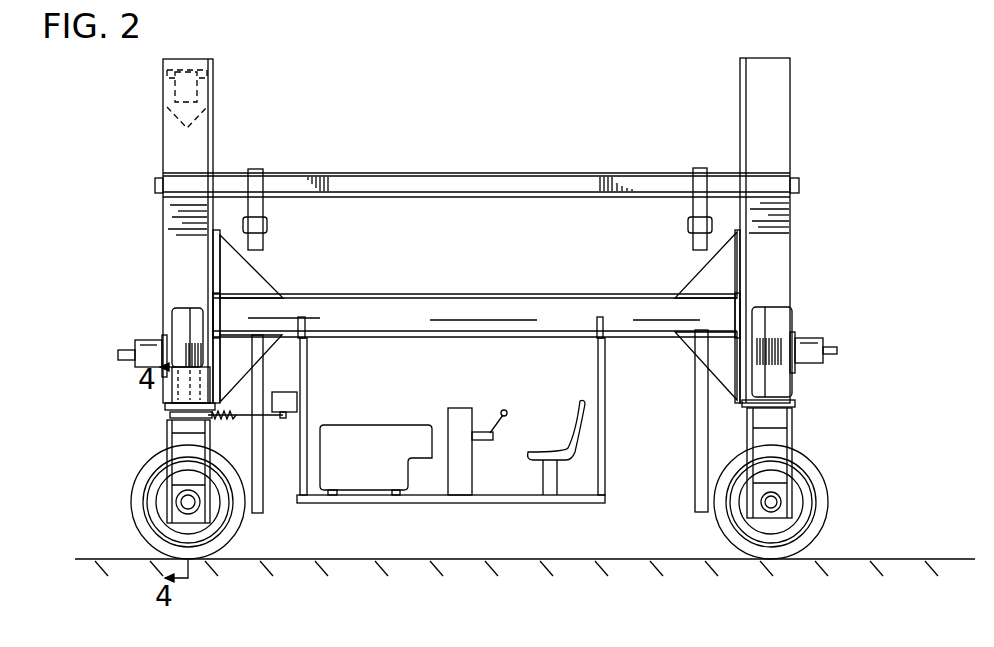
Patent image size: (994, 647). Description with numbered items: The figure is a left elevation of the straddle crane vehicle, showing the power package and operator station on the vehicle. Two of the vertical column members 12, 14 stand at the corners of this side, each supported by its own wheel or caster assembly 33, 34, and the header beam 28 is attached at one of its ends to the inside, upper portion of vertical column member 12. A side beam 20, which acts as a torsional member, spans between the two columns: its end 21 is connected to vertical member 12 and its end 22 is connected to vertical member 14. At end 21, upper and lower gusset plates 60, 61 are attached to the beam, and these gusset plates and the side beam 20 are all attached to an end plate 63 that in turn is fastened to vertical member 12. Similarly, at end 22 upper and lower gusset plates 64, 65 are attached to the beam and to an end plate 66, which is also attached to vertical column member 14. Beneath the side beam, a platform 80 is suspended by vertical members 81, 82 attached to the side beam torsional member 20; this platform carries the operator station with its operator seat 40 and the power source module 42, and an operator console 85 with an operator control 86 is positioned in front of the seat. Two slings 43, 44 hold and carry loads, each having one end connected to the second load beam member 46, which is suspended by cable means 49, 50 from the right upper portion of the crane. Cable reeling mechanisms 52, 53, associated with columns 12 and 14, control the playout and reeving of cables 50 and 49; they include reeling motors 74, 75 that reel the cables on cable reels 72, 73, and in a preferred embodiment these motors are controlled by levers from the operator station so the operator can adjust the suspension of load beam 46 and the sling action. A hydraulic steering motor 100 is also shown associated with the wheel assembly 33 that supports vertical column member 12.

The vertical column member 12 is at (173, 152).
The vertical column member 14 is at (780, 137).
The side beam 20 is at (450, 300).
The end of side beam 21 is at (228, 300).
The end of side beam 22 is at (732, 300).
The header beam 28 is at (200, 93).
The wheel or caster assembly 33 is at (126, 514).
The wheel or caster assembly 34 is at (832, 482).
The operator station 40 is at (542, 405).
The power source module 42 is at (376, 486).
The sling 43 is at (256, 250).
The sling 44 is at (700, 500).
The second load beam member 46 is at (468, 190).
The cable means 49 is at (770, 316).
The cable means 50 is at (183, 322).
The cable reeling mechanism 52 is at (125, 330).
The cable reeling mechanism 53 is at (818, 322).
The upper gusset plate 60 is at (256, 276).
The lower gusset plate 61 is at (266, 340).
The end plate 63 is at (216, 248).
The upper gusset plate 64 is at (692, 265).
The lower gusset plate 65 is at (686, 340).
The end plate 66 is at (740, 252).
The cable reel 72 is at (182, 350).
The cable reel 73 is at (764, 357).
The reeling motor 74 is at (136, 366).
The reeling motor 75 is at (822, 362).
The platform 80 is at (492, 505).
The vertical member 81 is at (302, 495).
The vertical member 82 is at (604, 488).
The operator console 85 is at (462, 415).
The operator control 86 is at (499, 412).
The hydraulic steering motor 100 is at (182, 392).